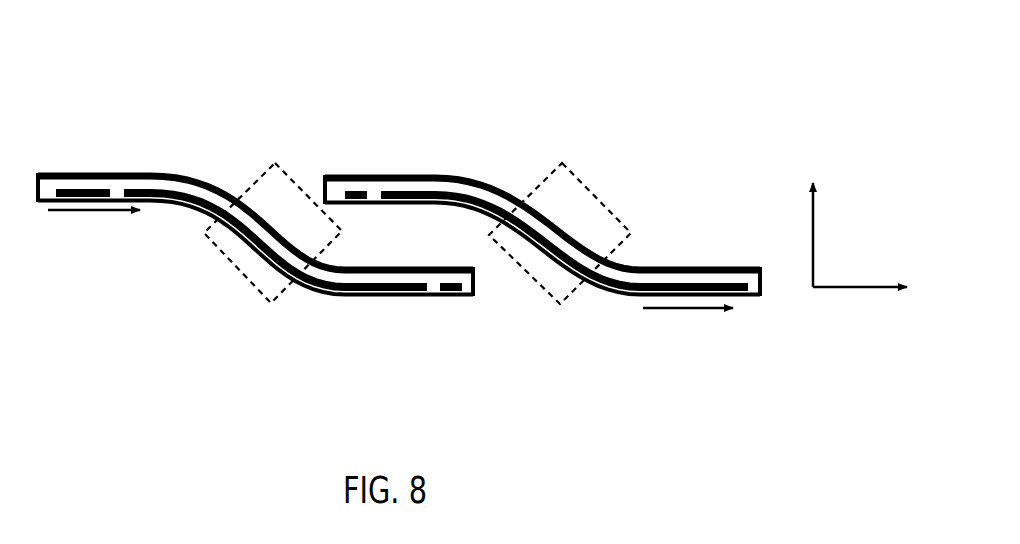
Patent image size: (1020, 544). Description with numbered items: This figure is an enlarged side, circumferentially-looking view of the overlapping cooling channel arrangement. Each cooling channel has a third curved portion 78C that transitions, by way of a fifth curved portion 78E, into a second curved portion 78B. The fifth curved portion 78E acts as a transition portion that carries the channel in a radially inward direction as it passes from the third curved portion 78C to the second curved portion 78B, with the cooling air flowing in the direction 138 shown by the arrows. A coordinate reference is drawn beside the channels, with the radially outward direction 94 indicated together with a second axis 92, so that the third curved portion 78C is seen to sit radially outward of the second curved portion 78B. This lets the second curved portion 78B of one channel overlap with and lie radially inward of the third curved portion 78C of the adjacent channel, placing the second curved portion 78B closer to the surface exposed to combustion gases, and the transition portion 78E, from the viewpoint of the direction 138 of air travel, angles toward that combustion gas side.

The second curved portion 78B is at (707, 268).
The third curved portion 78C is at (152, 176).
The fifth curved portion 78E is at (297, 180).
The direction 138 is at (98, 212).
The first axis (x direction) 92 is at (877, 290).
The radially outward direction 94 is at (817, 217).